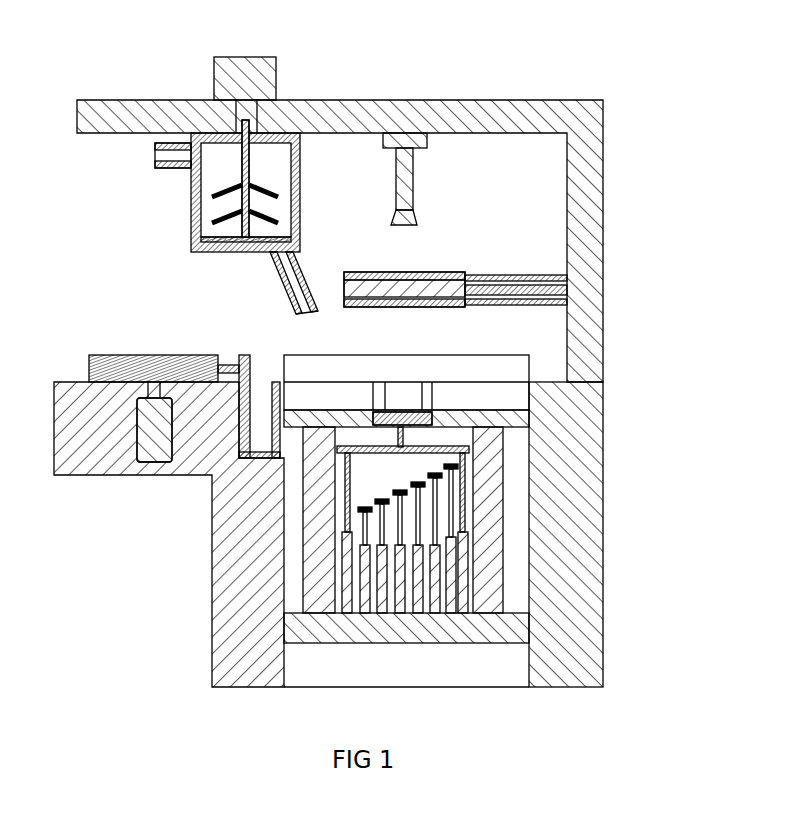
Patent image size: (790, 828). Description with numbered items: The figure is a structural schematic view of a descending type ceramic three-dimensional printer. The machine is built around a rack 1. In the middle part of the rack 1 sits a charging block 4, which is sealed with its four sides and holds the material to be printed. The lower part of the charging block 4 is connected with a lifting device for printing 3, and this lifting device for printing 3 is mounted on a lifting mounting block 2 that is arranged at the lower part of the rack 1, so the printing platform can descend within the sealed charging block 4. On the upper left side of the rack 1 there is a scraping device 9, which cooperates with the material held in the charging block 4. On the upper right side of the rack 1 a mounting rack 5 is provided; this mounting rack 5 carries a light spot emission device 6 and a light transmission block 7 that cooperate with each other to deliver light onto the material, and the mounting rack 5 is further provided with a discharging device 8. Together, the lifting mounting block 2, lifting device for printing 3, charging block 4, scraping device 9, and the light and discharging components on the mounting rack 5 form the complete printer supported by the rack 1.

The rack 1 is at (585, 632).
The lifting mounting block 2 is at (287, 628).
The lifting device for printing 3 is at (503, 533).
The charging block 4 is at (503, 408).
The mounting rack 5 is at (553, 125).
The light spot emission device 6 is at (410, 135).
The light transmission block 7 is at (465, 272).
The discharging device 8 is at (258, 165).
The scraping device 9 is at (192, 383).